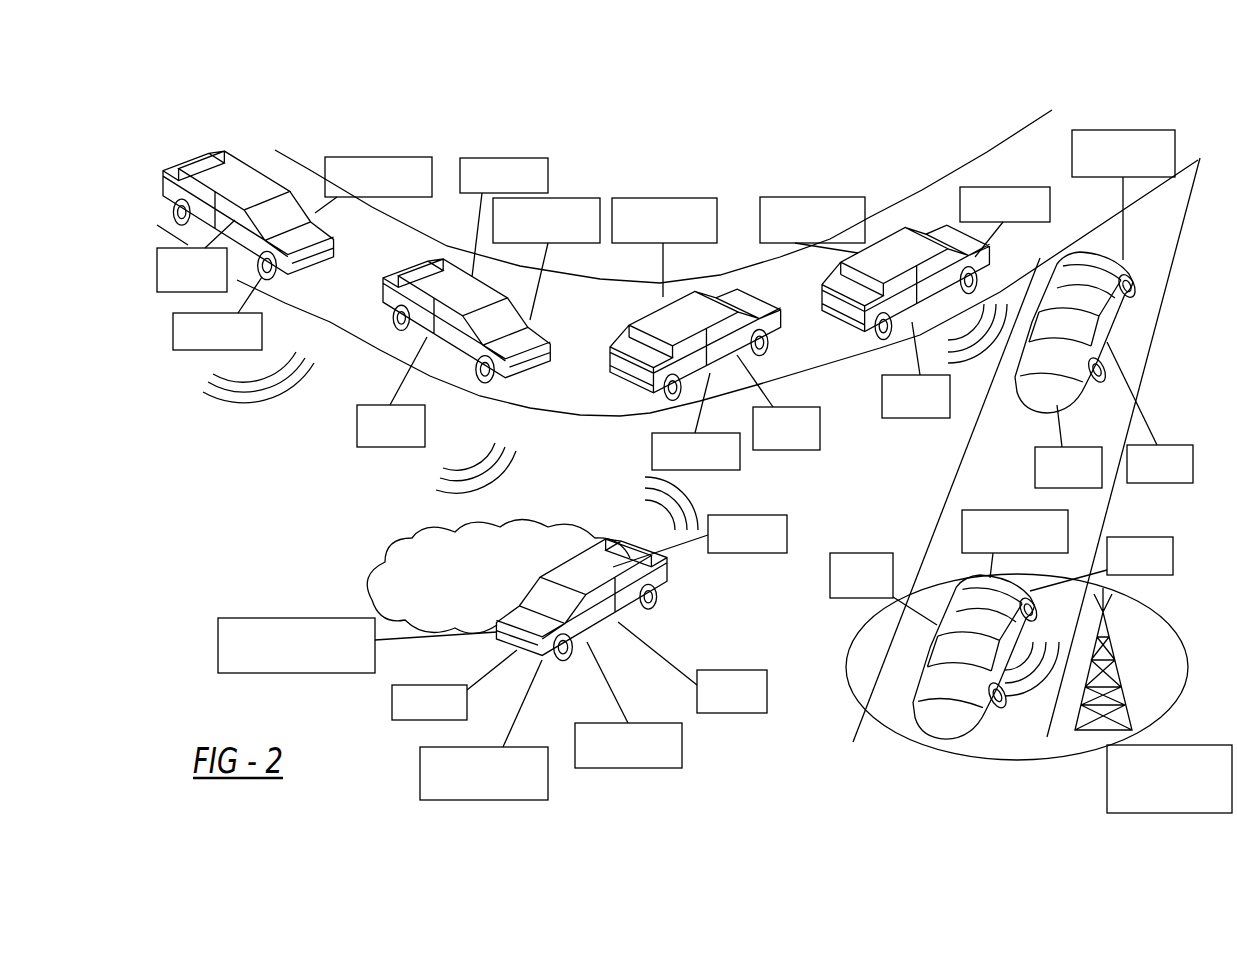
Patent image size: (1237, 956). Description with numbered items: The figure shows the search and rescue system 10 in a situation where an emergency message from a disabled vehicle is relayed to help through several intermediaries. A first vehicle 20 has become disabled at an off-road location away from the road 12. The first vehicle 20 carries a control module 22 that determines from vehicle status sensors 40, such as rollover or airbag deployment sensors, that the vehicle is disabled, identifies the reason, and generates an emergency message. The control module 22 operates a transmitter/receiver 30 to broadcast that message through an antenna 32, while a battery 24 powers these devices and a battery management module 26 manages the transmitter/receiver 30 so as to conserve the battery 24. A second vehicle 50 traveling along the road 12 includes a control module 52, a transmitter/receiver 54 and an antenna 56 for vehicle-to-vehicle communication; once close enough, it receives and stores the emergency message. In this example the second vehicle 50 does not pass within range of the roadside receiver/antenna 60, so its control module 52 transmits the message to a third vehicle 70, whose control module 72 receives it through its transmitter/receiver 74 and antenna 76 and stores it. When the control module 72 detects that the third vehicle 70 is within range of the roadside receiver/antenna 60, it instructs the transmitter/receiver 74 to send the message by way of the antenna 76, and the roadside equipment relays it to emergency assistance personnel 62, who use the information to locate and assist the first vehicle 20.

The search and rescue system 10 is at (247, 134).
The road 12 is at (580, 398).
The first vehicle 20 is at (593, 567).
The control module 22 is at (767, 693).
The battery 24 is at (743, 553).
The battery management module 26 is at (297, 618).
The transmitter/receiver 30 is at (682, 755).
The antenna 32 is at (392, 700).
The vehicle status sensors 40 is at (420, 750).
The second vehicle 50 is at (243, 177).
The control module 52 is at (170, 292).
The transmitter/receiver 54 is at (376, 157).
The antenna 56 is at (262, 332).
The roadside receiver/antenna 60 is at (1112, 645).
The emergency assistance personnel 62 is at (1107, 776).
The third vehicle 70 is at (1053, 303).
The control module 72 is at (1035, 450).
The transmitter/receiver 74 is at (1168, 130).
The antenna 76 is at (1193, 452).